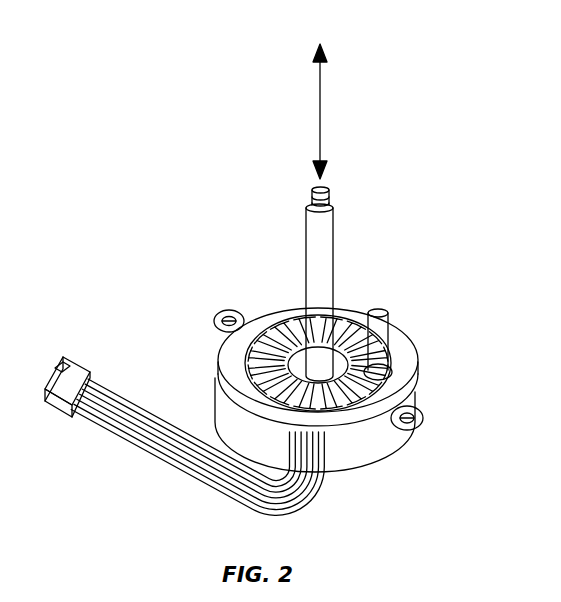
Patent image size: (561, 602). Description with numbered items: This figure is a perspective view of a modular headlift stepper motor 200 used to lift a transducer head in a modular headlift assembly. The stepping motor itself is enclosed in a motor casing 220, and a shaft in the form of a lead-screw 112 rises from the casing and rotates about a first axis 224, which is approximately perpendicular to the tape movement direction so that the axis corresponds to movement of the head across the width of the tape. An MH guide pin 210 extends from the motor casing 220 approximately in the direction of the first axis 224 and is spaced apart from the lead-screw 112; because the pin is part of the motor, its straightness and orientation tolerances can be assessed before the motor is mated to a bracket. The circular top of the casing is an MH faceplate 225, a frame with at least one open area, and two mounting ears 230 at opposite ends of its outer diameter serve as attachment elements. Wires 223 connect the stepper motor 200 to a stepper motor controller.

The modular headlift stepper motor 200 is at (124, 70).
The lead-screw 112 is at (324, 263).
The first axis 224 is at (322, 108).
The MH guide pin 210 is at (398, 330).
The MH faceplate 225 is at (406, 352).
The mounting ears 230 is at (218, 315).
The motor casing 220 is at (362, 452).
The wires 223 is at (122, 446).